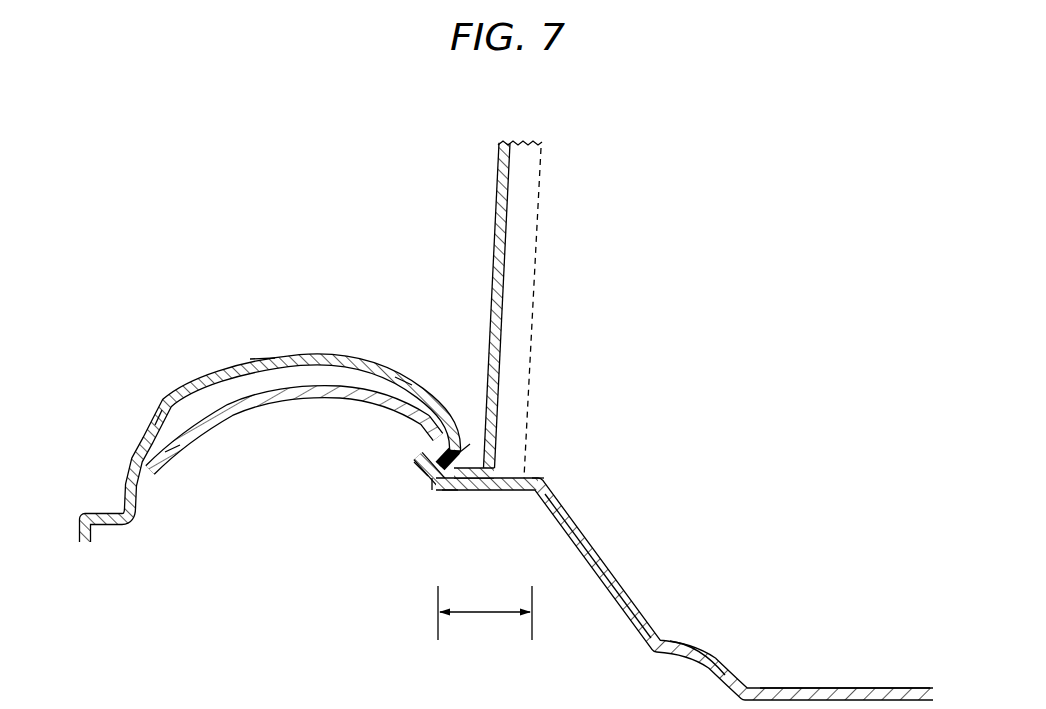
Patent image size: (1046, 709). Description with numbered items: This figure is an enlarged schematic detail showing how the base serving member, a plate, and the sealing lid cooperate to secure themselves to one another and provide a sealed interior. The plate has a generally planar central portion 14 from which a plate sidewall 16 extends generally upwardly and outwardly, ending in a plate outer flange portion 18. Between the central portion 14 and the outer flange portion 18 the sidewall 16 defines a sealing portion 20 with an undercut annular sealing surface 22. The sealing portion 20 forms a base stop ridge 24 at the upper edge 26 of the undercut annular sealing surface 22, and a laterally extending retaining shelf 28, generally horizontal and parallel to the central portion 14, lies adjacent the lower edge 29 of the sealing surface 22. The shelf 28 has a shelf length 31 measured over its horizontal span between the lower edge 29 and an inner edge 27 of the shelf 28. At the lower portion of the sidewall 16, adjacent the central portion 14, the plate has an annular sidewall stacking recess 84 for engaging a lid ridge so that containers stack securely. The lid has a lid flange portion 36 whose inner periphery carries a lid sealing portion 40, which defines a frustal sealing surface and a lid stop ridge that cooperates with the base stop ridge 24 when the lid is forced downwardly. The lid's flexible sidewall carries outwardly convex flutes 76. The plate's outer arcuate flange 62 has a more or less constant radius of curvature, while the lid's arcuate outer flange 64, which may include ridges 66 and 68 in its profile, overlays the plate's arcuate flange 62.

The planar central portion 14 is at (843, 688).
The plate sidewall 16 is at (595, 550).
The plate outer flange portion 18 is at (253, 407).
The sealing portion 20 is at (449, 500).
The undercut annular sealing surface 22 is at (413, 453).
The base stop ridge 24 is at (420, 425).
The upper edge 26 is at (417, 470).
The inner edge 27 is at (537, 478).
The retaining shelf 28 is at (500, 492).
The lower edge 29 is at (430, 482).
The shelf length 31 is at (482, 614).
The lid flange portion 36 is at (207, 371).
The lid sealing portion 40 is at (470, 445).
The outer arcuate flange 62 is at (171, 455).
The arcuate outer flange 64 is at (262, 358).
The ridge 66 is at (166, 397).
The ridge 68 is at (404, 378).
The flute 76 is at (495, 183).
The annular sidewall stacking recess 84 is at (713, 670).